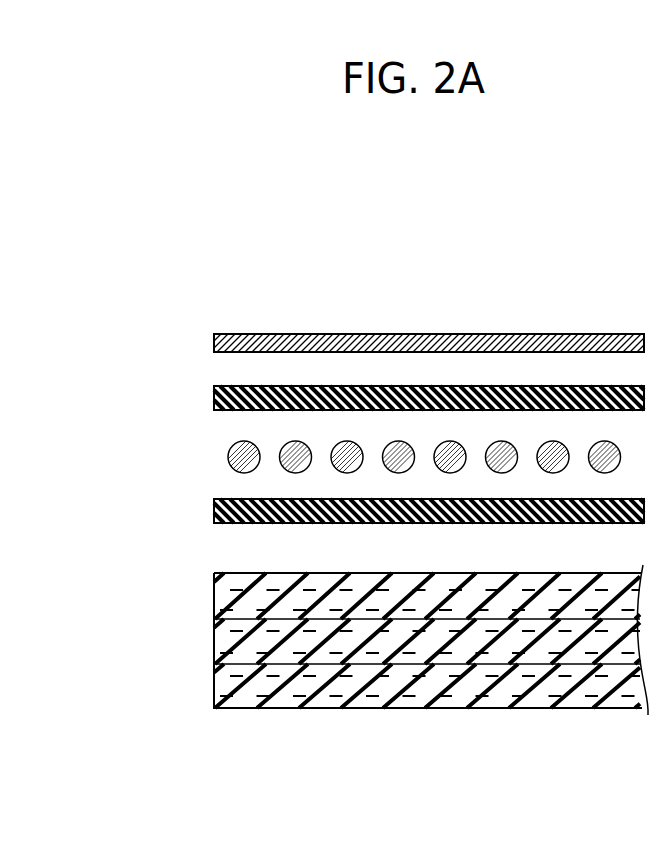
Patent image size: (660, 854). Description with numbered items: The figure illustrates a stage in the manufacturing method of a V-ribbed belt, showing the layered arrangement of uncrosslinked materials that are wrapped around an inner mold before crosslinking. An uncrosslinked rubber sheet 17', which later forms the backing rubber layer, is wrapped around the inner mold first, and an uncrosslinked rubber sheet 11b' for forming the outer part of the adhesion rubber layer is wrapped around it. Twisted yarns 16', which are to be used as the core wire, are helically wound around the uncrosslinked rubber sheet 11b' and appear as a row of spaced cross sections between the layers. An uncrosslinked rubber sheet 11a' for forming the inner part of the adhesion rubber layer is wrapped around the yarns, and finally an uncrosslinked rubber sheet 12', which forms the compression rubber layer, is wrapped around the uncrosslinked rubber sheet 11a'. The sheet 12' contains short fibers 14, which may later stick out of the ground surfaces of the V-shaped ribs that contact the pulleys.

The uncrosslinked rubber sheet 17' is at (386, 339).
The uncrosslinked rubber sheet 11b' is at (380, 396).
The twisted yarns 16' is at (374, 455).
The uncrosslinked rubber sheet 11a' is at (380, 510).
The uncrosslinked rubber sheet 12' is at (388, 669).
The short fibers 14 is at (333, 698).